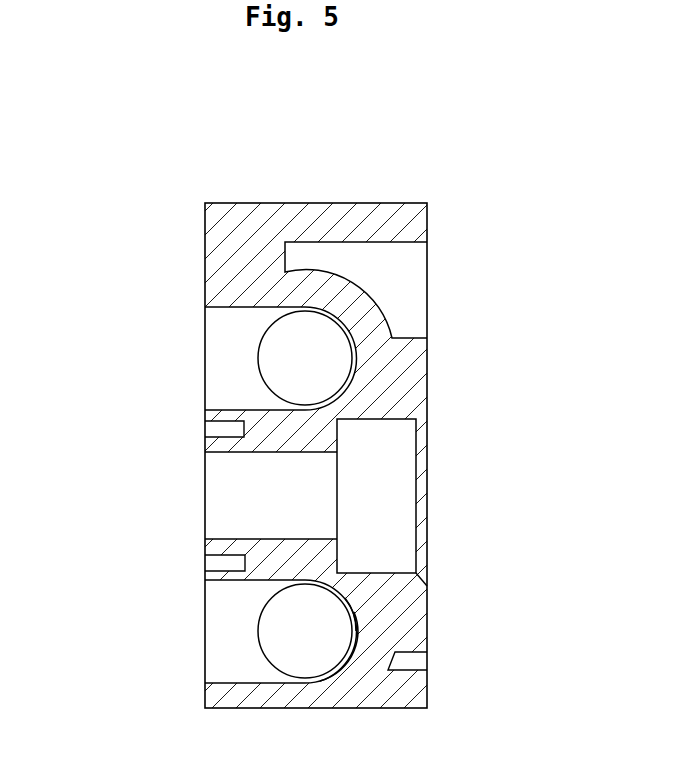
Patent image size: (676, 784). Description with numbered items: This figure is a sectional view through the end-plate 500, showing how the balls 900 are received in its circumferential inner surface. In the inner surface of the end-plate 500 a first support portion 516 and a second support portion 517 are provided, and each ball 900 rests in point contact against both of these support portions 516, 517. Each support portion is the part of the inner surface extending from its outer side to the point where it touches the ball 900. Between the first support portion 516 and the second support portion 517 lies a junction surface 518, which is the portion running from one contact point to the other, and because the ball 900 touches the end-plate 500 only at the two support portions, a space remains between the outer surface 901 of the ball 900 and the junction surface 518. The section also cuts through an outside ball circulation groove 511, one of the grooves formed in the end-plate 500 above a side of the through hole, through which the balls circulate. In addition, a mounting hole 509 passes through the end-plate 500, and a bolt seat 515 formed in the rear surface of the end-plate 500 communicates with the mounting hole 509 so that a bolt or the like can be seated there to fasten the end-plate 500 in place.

The end-plate 500 is at (323, 101).
The mounting hole 509 is at (248, 500).
The outside ball circulation groove 511 is at (226, 638).
The bolt seat 515 is at (338, 553).
The first support portion 516 is at (345, 602).
The second support portion 517 is at (342, 667).
The junction surface 518 is at (357, 632).
The ball 900 is at (266, 654).
The outer surface of the ball 901 is at (352, 627).